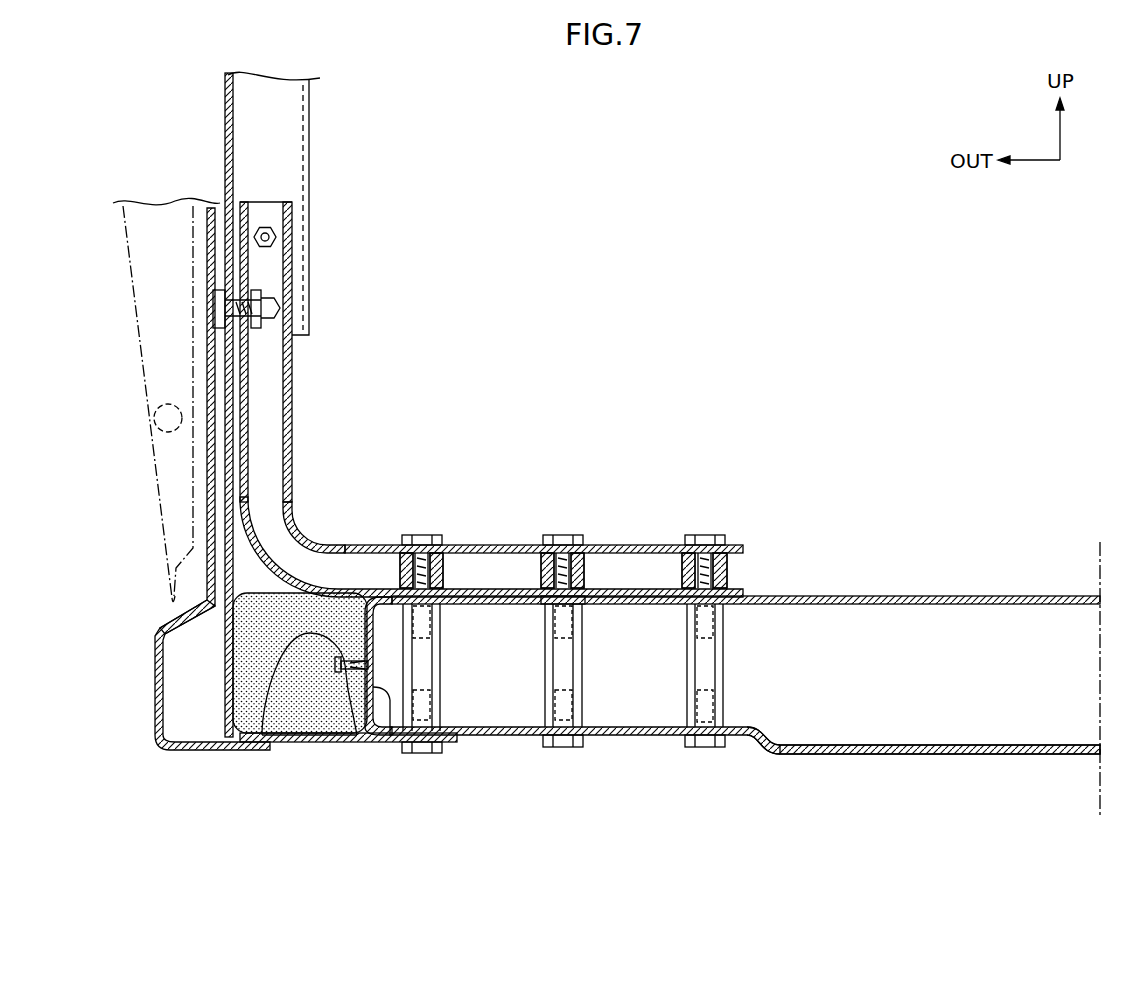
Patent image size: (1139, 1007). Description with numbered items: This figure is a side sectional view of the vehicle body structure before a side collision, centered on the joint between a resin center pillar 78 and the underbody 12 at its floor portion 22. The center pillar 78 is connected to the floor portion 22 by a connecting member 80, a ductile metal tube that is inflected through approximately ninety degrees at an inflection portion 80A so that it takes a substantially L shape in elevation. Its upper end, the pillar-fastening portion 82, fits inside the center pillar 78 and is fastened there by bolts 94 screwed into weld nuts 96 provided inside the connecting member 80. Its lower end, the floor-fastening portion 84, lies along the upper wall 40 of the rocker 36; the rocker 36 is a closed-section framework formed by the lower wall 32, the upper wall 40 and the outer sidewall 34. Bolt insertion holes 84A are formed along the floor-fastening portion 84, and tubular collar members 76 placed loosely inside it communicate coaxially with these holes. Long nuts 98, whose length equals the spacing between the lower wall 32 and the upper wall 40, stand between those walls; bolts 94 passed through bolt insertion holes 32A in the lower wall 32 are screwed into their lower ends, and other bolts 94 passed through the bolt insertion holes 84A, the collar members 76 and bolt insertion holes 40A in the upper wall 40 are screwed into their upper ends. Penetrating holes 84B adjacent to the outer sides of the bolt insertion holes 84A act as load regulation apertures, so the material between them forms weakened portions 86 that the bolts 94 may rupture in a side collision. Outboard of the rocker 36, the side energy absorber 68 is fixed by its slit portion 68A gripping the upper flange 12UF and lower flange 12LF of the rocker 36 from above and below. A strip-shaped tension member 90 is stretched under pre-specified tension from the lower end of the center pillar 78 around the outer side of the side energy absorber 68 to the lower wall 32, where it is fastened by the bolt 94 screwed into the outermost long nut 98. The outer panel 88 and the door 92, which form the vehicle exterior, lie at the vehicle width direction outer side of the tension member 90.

The underbody 12 is at (1038, 580).
The upper flange 12UF is at (265, 693).
The lower flange 12LF is at (357, 742).
The floor portion 22 is at (840, 754).
The lower wall 32 is at (973, 755).
The bolt insertion hole 32A is at (567, 727).
The outer sidewall 34 is at (390, 690).
The rocker 36 is at (635, 736).
The upper wall 40 is at (950, 595).
The bolt insertion hole 40A is at (567, 604).
The side energy absorber 68 is at (295, 700).
The slit portion 68A is at (327, 740).
The collar member 76 is at (500, 545).
The center pillar 78 is at (225, 115).
The connecting member 80 is at (293, 510).
The inflection portion 80A is at (268, 565).
The pillar-fastening portion 82 is at (292, 260).
The floor-fastening portion 84 is at (638, 545).
The bolt insertion hole 84A is at (708, 545).
The penetrating hole 84B is at (390, 545).
The weakened portion 86 is at (553, 545).
The outer panel 88 is at (155, 690).
The tension member 90 is at (208, 640).
The door 92 is at (130, 308).
The bolt 94 is at (214, 308).
The weld nut 96 is at (275, 228).
The long nut 98 is at (537, 667).